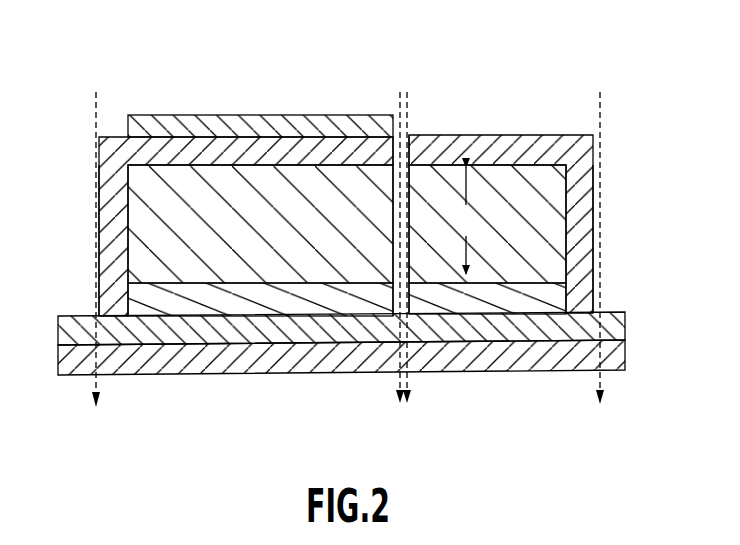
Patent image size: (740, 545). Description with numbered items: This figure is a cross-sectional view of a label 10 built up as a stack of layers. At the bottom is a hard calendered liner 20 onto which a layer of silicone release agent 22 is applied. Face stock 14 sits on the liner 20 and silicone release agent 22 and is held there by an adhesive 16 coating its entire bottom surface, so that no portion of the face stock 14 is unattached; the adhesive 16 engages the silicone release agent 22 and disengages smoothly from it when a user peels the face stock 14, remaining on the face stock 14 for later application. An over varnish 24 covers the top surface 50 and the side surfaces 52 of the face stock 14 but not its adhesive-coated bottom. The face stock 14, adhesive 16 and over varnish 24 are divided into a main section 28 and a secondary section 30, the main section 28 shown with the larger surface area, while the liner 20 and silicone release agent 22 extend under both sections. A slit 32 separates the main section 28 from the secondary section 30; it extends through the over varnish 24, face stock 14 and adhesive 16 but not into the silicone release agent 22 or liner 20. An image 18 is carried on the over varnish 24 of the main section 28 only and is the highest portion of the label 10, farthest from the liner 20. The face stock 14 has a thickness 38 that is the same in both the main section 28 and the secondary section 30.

The label 10 is at (629, 135).
The face stock 14 is at (158, 240).
The adhesive 16 is at (152, 297).
The image 18 is at (232, 116).
The hard calendered liner 20 is at (625, 353).
The silicone release agent 22 is at (625, 323).
The over varnish 24 is at (587, 250).
The main section 28 is at (397, 90).
The secondary section 30 is at (597, 89).
The slit 32 is at (403, 162).
The thickness 38 is at (467, 220).
The top surface 50 is at (307, 152).
The side surfaces 52 is at (124, 202).